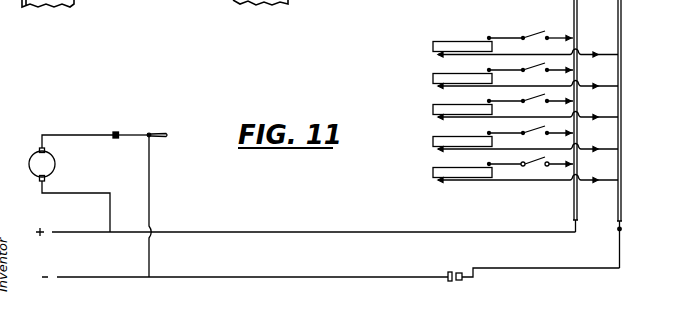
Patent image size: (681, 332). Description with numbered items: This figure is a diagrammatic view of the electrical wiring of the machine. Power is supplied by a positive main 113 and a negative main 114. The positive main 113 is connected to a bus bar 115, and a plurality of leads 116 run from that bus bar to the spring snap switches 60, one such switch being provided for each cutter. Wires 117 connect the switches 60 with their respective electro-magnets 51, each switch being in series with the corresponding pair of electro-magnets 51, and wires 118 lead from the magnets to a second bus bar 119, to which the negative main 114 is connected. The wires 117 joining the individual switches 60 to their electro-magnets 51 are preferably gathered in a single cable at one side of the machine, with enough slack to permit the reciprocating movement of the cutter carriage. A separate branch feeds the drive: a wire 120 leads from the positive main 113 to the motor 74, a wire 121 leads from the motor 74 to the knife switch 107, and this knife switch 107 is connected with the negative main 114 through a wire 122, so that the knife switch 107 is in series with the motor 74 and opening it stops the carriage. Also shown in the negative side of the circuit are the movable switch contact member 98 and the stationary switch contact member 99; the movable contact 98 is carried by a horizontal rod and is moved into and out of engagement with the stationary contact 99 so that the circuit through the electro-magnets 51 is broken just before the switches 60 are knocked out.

The electro-magnets 51 is at (461, 31).
The spring snap switches 60 is at (543, 22).
The motor 74 is at (34, 169).
The movable switch contact member 98 is at (462, 272).
The stationary switch contact member 99 is at (449, 272).
The knife switch 107 is at (155, 123).
The positive main 113 is at (299, 231).
The negative main 114 is at (364, 276).
The bus bar 115 is at (573, 196).
The leads 116 is at (569, 25).
The wires 117 is at (507, 25).
The wires 118 is at (503, 55).
The second bus bar 119 is at (621, 72).
The wire 120 is at (108, 193).
The wire 121 is at (82, 126).
The wire 122 is at (151, 222).